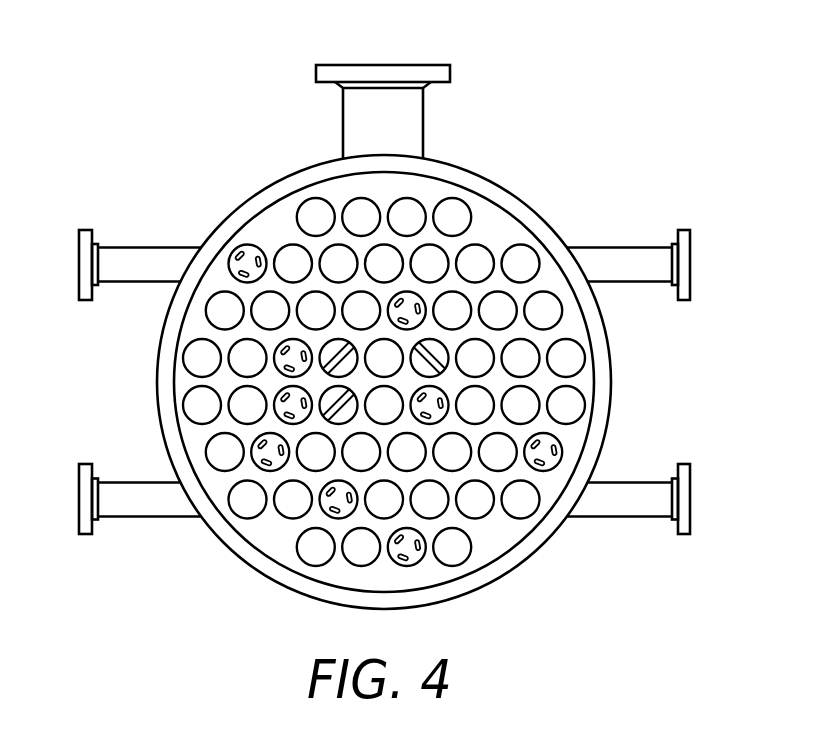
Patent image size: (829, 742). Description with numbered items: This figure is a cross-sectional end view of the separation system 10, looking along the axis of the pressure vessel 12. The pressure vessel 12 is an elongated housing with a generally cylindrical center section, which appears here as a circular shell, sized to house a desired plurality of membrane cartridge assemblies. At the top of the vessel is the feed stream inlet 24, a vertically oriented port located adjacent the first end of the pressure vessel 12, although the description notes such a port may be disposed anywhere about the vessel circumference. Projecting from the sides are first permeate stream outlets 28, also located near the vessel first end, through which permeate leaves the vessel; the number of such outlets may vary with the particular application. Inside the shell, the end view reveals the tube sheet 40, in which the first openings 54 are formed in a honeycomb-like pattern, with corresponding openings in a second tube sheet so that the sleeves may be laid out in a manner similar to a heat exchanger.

The separation system 10 is at (384, 315).
The pressure vessel 12 is at (612, 393).
The feed stream inlet 24 is at (415, 72).
The first permeate stream outlet 28 is at (78, 264).
The tube sheet 40 is at (493, 230).
The first openings 54 is at (453, 212).